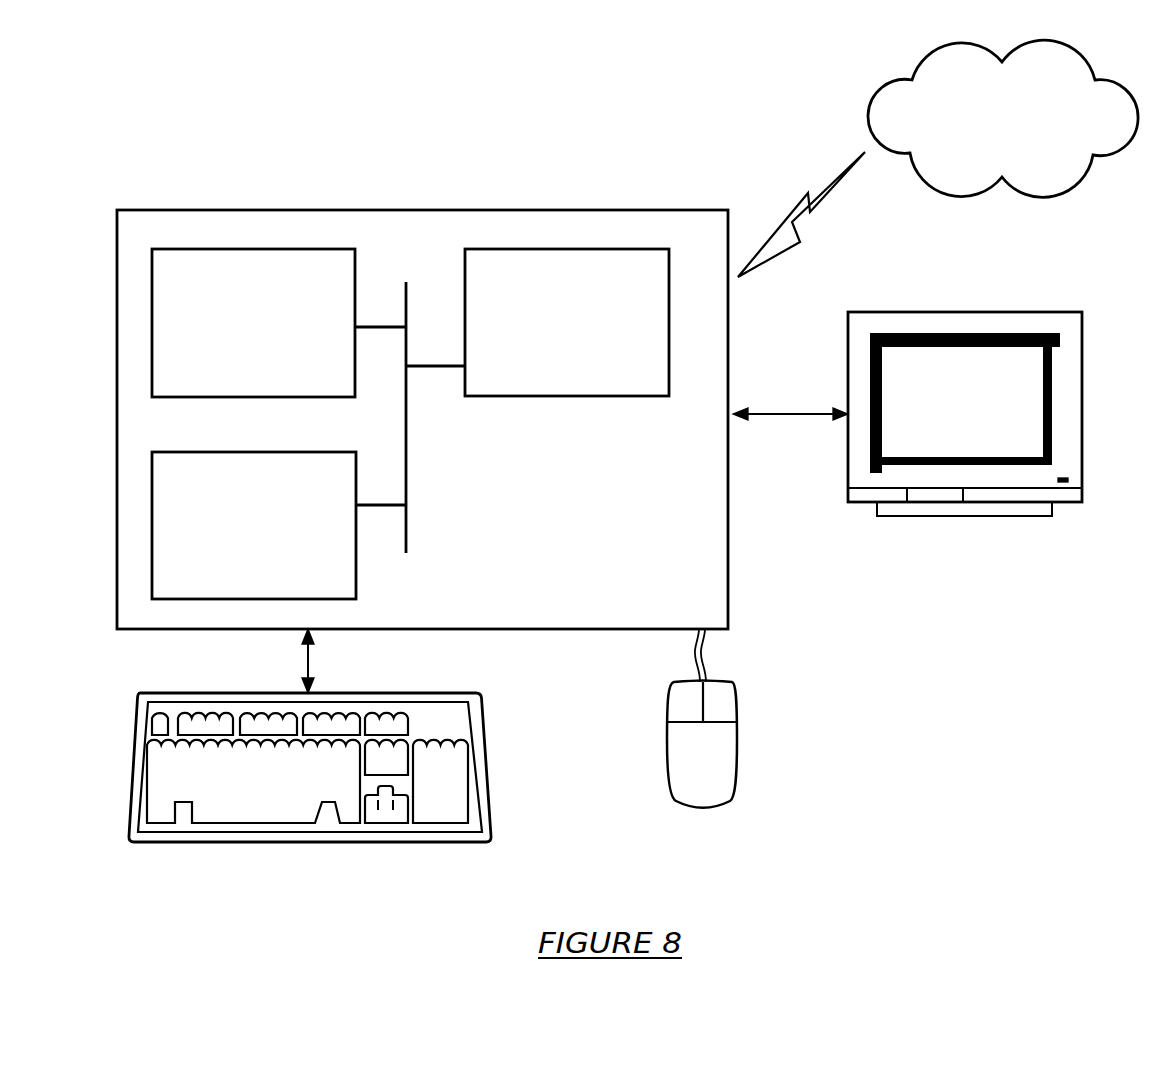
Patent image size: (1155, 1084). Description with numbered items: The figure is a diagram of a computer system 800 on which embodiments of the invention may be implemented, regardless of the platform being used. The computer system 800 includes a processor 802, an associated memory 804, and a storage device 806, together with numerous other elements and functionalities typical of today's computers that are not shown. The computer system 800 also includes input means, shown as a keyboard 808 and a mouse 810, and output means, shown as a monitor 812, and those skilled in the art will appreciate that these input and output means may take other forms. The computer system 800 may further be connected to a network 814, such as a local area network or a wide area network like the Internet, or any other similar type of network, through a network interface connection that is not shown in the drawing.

The computer system 800 is at (166, 194).
The processor 802 is at (551, 335).
The memory 804 is at (235, 334).
The storage device 806 is at (232, 537).
The keyboard 808 is at (228, 803).
The mouse 810 is at (684, 762).
The monitor 812 is at (941, 408).
The network 814 is at (938, 158).